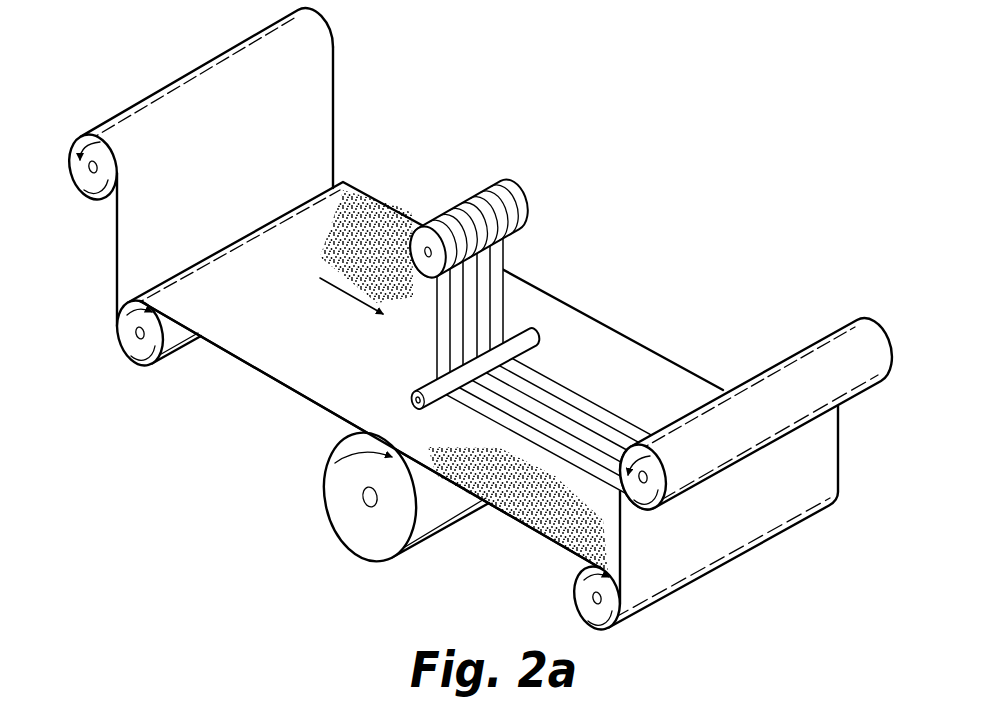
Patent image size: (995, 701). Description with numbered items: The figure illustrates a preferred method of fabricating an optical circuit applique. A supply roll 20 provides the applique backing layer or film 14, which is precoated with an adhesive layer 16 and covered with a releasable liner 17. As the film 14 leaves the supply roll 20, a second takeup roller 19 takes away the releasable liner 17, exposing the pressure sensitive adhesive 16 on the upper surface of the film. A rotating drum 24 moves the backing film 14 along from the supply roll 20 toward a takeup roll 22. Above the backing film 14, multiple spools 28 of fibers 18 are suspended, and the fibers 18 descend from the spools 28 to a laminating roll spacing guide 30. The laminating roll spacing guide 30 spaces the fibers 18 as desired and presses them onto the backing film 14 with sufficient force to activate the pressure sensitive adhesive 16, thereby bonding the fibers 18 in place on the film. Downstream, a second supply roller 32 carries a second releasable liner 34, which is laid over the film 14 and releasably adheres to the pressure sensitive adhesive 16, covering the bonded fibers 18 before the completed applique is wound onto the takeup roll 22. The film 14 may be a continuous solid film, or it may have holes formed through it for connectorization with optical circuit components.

The applique backing layer or film 14 is at (256, 368).
The adhesive layer 16 is at (382, 208).
The releasable liner 17 is at (128, 244).
The fibers 18 is at (490, 300).
The second takeup roller 19 is at (132, 117).
The supply roll 20 is at (127, 343).
The takeup roll 22 is at (577, 604).
The rotating drum 24 is at (350, 517).
The spools 28 is at (519, 196).
The laminating roll spacing guide 30 is at (416, 392).
The second supply roller 32 is at (818, 350).
The second releasable liner 34 is at (828, 462).